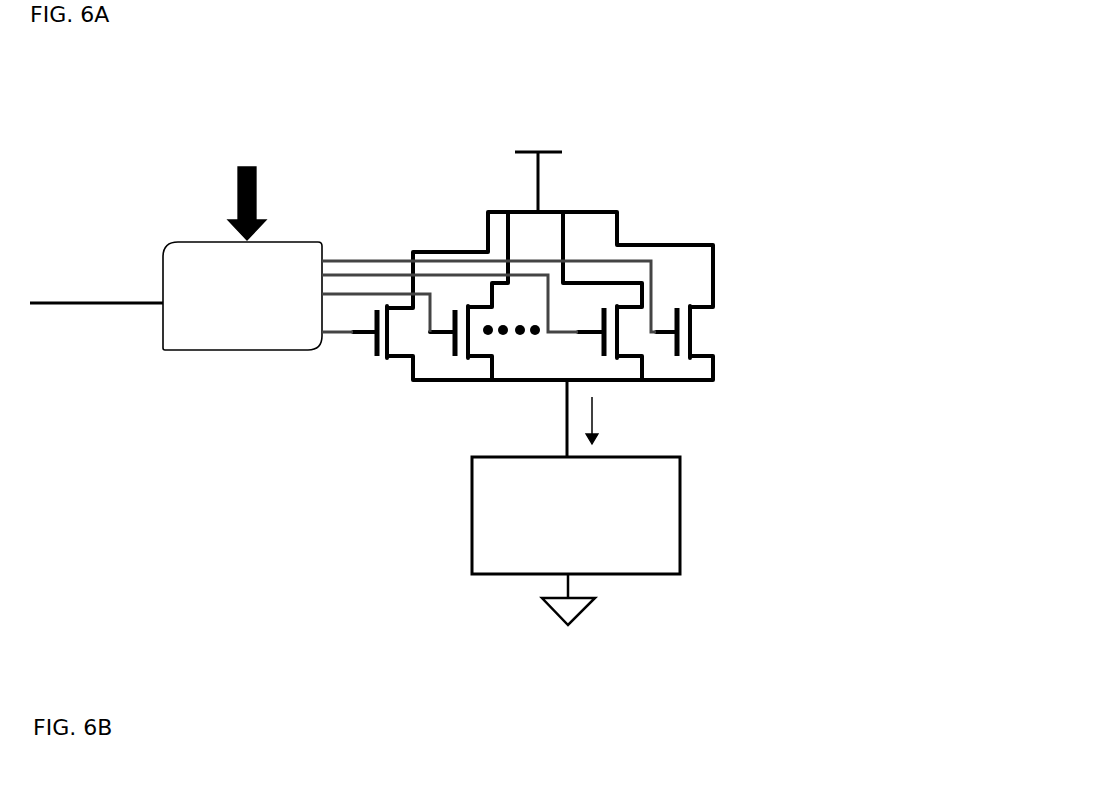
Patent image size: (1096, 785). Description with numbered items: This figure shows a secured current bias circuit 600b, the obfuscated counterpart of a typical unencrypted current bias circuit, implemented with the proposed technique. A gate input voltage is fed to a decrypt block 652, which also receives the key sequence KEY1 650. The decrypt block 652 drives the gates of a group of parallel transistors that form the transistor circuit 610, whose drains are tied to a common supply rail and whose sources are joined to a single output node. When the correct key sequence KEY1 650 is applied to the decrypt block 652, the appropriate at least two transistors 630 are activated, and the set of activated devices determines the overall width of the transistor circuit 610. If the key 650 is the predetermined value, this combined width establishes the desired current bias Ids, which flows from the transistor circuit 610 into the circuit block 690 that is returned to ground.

The secured current bias circuit 600b is at (819, 76).
The key sequence KEY1 650 is at (200, 150).
The decrypt block 652 is at (167, 250).
The transistors 630 is at (677, 307).
The transistor circuit 610 is at (724, 334).
The circuit block 690 is at (472, 503).